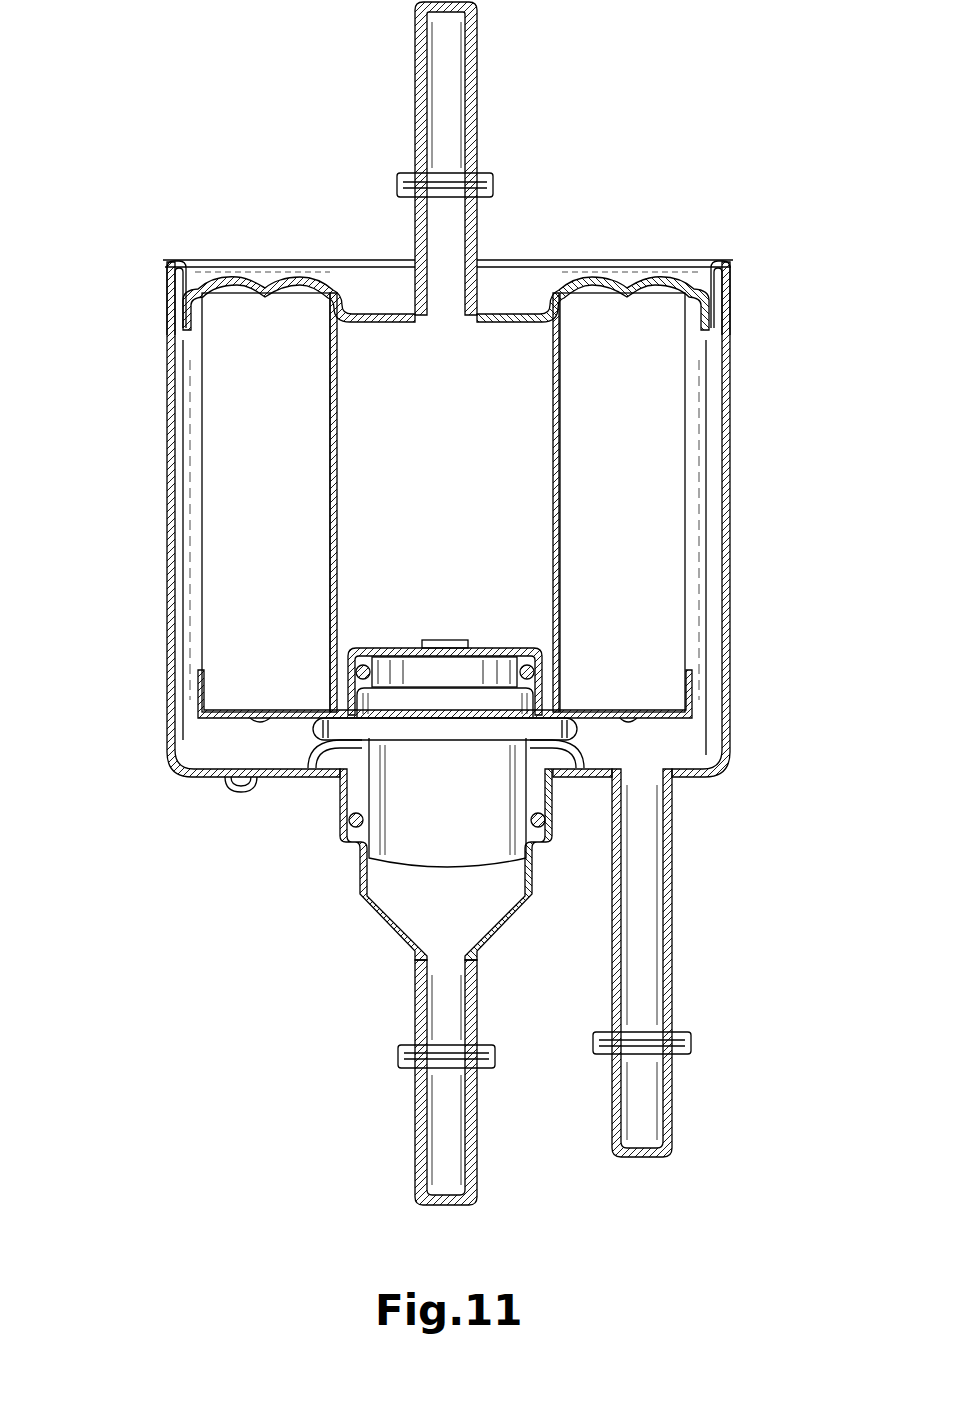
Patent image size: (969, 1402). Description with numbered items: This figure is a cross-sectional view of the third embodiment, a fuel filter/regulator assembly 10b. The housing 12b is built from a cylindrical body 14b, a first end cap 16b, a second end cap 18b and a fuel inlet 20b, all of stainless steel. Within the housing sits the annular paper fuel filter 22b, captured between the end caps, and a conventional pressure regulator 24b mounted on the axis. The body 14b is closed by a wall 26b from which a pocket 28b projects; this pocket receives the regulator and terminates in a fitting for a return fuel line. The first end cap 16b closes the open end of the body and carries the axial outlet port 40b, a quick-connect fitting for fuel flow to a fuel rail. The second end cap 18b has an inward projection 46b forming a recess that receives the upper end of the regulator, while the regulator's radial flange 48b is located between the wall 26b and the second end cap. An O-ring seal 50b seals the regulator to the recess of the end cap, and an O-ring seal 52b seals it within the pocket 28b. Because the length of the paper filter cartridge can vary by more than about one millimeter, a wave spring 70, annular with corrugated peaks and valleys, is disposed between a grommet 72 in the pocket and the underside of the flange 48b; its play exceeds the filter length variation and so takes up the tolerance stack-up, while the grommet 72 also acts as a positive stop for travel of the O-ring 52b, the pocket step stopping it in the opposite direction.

The fuel filter/regulator assembly 10b is at (778, 312).
The housing 12b is at (732, 625).
The cylindrical body 14b is at (178, 530).
The first end cap 16b is at (302, 292).
The second end cap 18b is at (690, 716).
The fuel inlet 20b is at (676, 930).
The fuel filter 22b is at (660, 505).
The pressure regulator 24b is at (400, 852).
The wall 26b is at (183, 776).
The pocket 28b is at (373, 935).
The outlet port 40b is at (414, 120).
The inward projection 46b is at (368, 646).
The radial flange 48b is at (312, 727).
The O-ring seal 50b is at (527, 648).
The O-ring seal 52b is at (348, 820).
The wave spring 70 is at (578, 747).
The grommet 72 is at (556, 790).